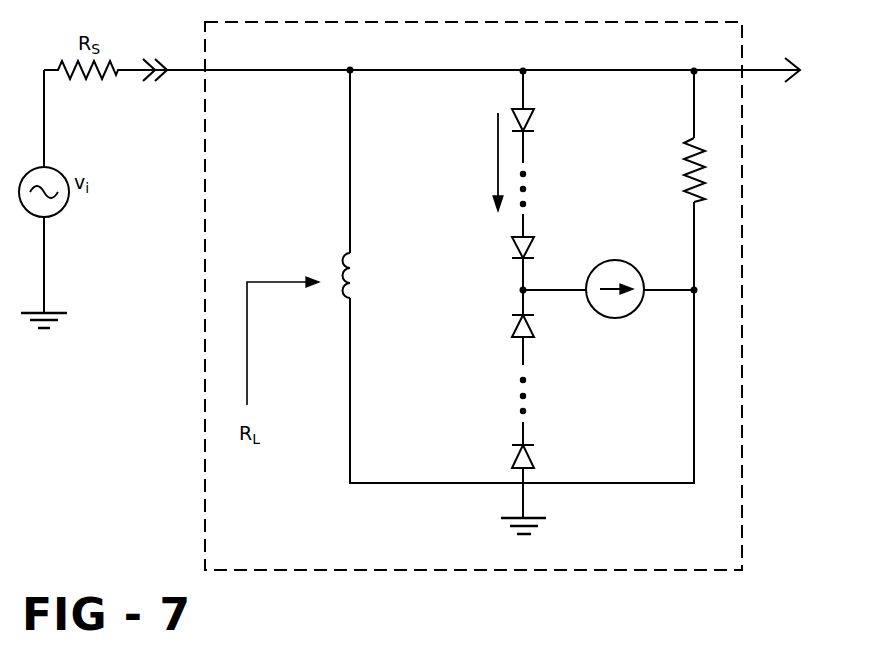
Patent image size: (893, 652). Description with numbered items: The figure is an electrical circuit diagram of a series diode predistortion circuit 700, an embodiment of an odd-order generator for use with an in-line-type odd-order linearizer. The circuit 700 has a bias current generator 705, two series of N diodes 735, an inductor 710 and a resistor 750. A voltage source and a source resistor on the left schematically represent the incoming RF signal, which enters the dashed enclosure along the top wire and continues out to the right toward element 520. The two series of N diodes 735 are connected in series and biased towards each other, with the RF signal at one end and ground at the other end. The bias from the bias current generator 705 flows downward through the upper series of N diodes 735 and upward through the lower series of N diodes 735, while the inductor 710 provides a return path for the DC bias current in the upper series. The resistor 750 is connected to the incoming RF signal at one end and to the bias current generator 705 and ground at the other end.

The series diode predistortion circuit 700 is at (592, 571).
The bias current generator 705 is at (612, 260).
The inductor 710 is at (352, 290).
The series of N diodes 735 is at (456, 171).
The resistor 750 is at (662, 185).
The output node to element 520 is at (813, 76).